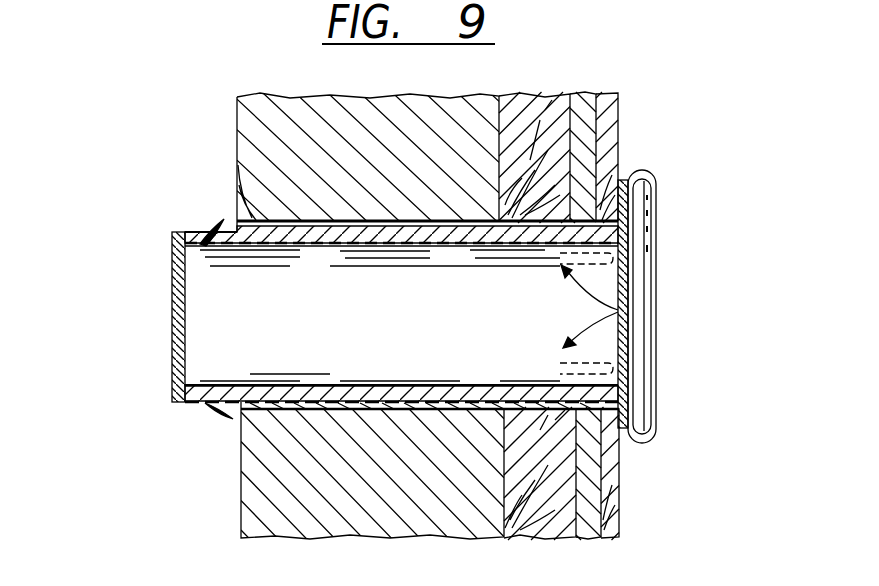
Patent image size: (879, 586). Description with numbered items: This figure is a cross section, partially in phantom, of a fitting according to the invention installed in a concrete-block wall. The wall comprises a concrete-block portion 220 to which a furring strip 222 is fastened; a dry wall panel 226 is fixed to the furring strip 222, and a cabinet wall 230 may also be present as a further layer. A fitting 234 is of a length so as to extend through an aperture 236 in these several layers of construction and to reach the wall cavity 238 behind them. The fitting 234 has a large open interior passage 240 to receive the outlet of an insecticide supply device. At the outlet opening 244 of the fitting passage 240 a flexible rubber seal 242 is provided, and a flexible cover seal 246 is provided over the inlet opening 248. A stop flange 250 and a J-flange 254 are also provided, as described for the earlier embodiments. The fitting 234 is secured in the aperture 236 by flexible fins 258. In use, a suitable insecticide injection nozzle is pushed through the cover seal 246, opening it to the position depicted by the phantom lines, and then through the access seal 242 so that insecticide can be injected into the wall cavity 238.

The concrete-block portion 220 is at (298, 97).
The furring strip 222 is at (520, 95).
The dry wall panel 226 is at (590, 93).
The cabinet wall 230 is at (613, 127).
The fitting 234 is at (188, 227).
The aperture 236 is at (240, 180).
The wall cavity 238 is at (182, 500).
The interior passage 240 is at (400, 350).
The flexible rubber seal 242 is at (172, 351).
The outlet opening 244 is at (200, 276).
The flexible cover seal 246 is at (620, 307).
The inlet opening 248 is at (612, 362).
The stop flange 250 is at (633, 225).
The J-flange 254 is at (642, 175).
The flexible fins 258 is at (227, 412).